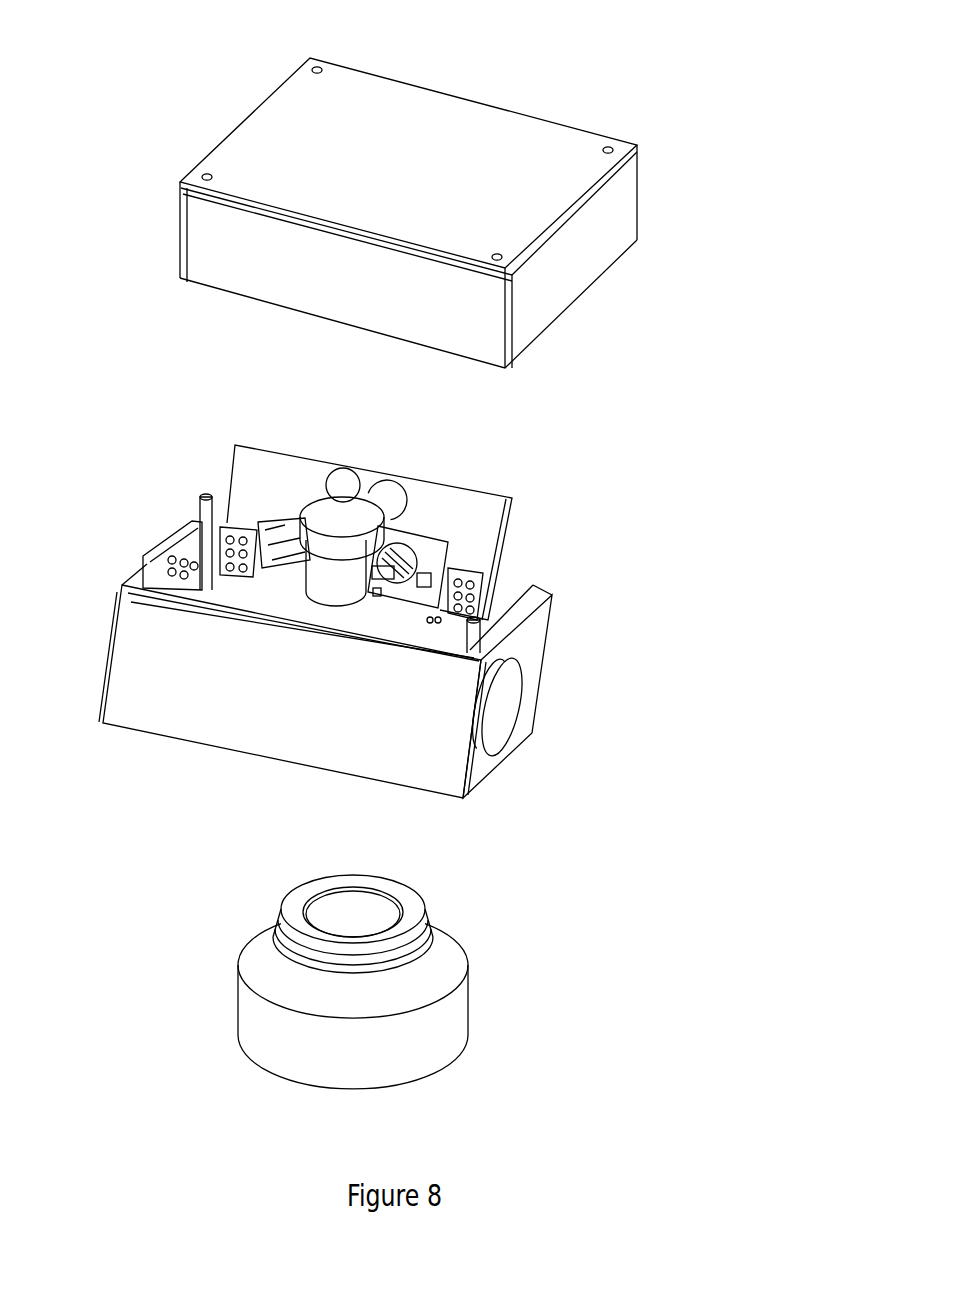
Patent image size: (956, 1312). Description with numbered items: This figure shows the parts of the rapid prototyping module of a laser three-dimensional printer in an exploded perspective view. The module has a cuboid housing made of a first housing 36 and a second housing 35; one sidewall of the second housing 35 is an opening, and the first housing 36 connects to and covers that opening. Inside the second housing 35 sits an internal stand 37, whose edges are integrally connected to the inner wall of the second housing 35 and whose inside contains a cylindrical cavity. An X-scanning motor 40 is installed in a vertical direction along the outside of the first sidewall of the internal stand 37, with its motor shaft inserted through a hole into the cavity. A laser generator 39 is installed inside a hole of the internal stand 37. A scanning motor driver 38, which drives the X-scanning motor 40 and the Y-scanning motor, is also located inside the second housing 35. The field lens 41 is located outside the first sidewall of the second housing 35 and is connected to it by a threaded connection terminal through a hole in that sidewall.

The second housing 35 is at (253, 723).
The first housing 36 is at (485, 137).
The internal stand 37 is at (270, 597).
The scanning motor driver 38 is at (432, 497).
The laser generator 39 is at (508, 698).
The X-scanning motor 40 is at (327, 540).
The field lens 41 is at (410, 1042).